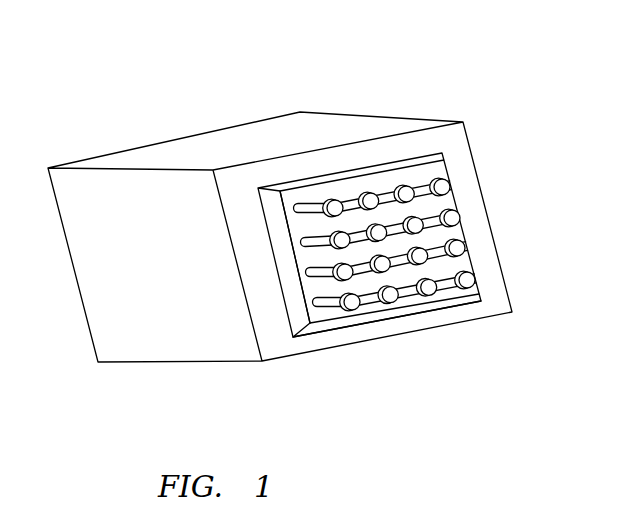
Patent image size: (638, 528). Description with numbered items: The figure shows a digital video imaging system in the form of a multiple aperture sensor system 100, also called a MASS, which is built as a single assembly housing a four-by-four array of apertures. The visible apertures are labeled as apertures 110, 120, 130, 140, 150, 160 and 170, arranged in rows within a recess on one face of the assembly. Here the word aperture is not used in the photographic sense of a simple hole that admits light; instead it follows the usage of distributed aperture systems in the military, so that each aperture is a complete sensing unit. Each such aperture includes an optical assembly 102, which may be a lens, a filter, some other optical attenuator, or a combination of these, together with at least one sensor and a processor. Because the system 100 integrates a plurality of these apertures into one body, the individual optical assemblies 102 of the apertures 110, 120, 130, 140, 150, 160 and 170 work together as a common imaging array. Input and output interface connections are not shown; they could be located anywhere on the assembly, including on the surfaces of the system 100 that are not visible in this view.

The multiple aperture sensor system 100 is at (357, 83).
The optical assembly 102 is at (330, 208).
The aperture 110 is at (313, 151).
The aperture 120 is at (365, 185).
The aperture 130 is at (402, 175).
The aperture 140 is at (455, 178).
The aperture 150 is at (292, 242).
The aperture 160 is at (328, 283).
The aperture 170 is at (355, 325).